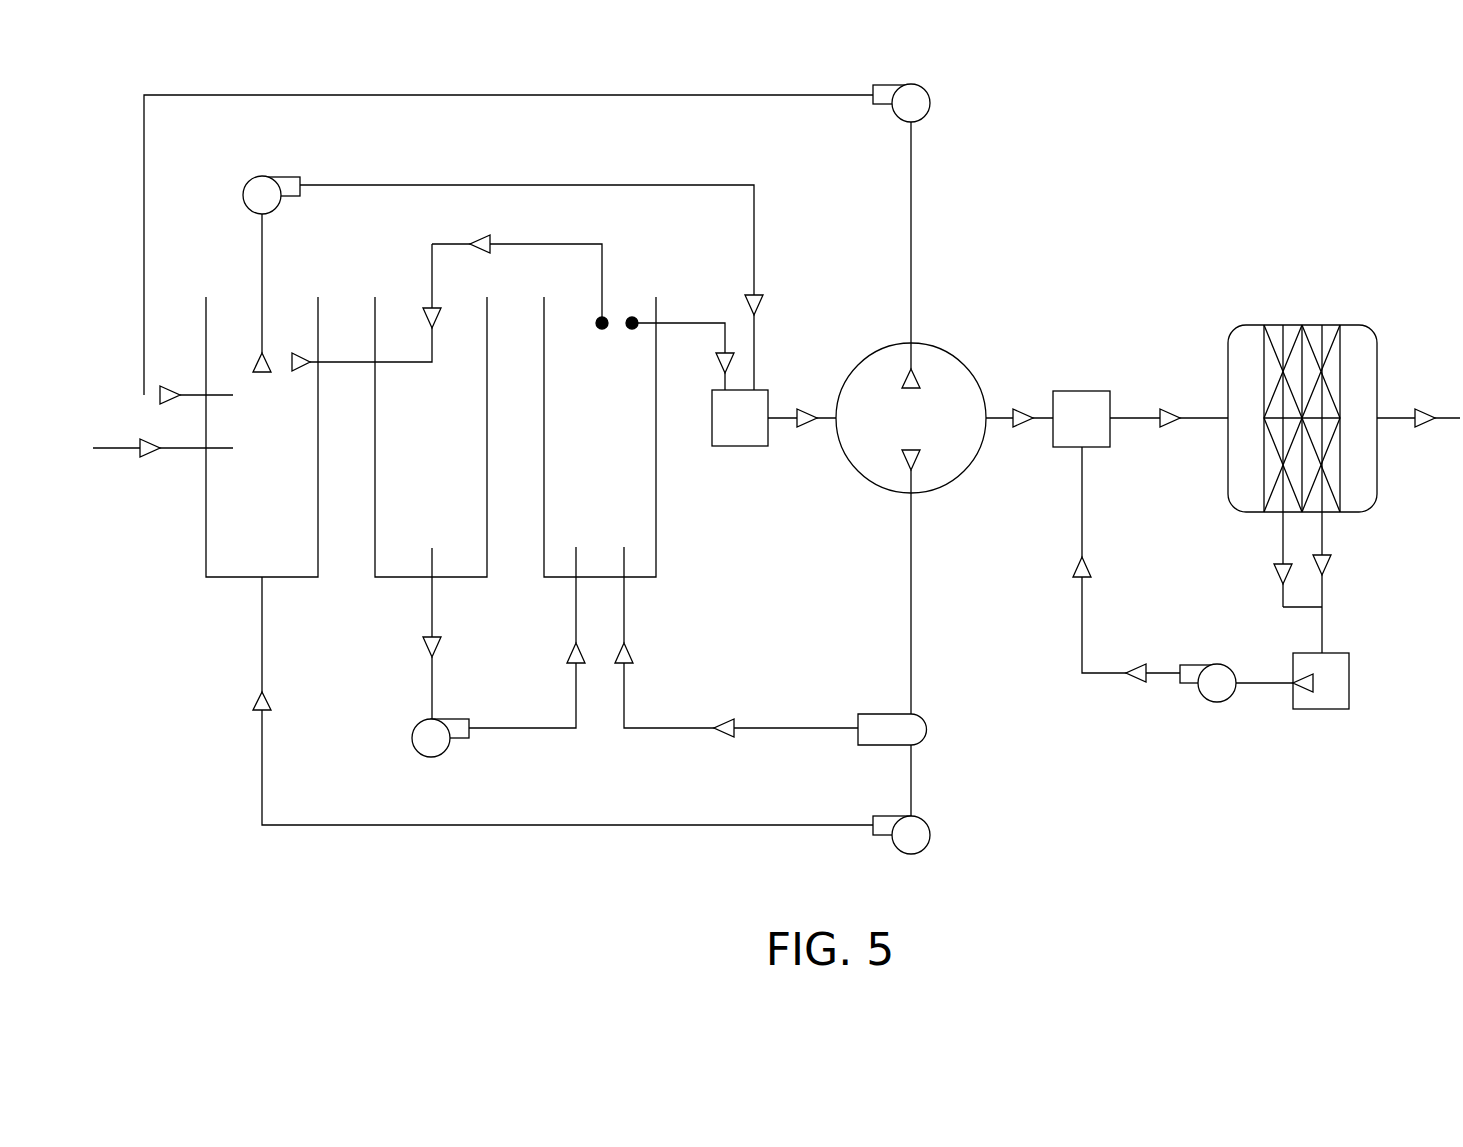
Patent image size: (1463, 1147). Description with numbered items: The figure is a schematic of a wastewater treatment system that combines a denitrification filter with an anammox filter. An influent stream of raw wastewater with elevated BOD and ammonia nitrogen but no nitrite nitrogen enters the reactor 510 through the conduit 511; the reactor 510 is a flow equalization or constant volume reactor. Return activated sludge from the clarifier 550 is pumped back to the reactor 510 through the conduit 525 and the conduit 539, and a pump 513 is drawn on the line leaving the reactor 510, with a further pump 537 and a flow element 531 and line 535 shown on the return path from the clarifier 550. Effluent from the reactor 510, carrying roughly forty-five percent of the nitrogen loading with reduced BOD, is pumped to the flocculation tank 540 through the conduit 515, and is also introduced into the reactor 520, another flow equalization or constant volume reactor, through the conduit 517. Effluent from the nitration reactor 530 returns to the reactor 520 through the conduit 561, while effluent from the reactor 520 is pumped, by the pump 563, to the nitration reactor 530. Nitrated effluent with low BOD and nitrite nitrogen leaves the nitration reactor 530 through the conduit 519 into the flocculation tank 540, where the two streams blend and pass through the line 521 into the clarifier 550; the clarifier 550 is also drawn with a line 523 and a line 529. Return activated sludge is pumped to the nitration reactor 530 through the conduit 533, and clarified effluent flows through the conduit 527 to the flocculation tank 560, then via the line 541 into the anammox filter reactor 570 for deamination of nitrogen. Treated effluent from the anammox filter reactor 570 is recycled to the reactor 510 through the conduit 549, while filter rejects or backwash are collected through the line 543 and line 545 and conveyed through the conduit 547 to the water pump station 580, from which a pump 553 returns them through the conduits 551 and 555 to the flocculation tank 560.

The reactor 510 is at (244, 506).
The conduit 511 is at (134, 474).
The pump 513 is at (252, 178).
The conduit 515 is at (442, 185).
The conduit 517 is at (343, 360).
The conduit 519 is at (687, 322).
The reactor 520 is at (409, 506).
The line 521 is at (810, 408).
The line 523 is at (911, 206).
The conduit 525 is at (930, 103).
The conduit 527 is at (1003, 408).
The line 529 is at (911, 592).
The nitration reactor 530 is at (577, 506).
The valve 531 is at (927, 722).
The conduit 533 is at (780, 727).
The line 535 is at (911, 780).
The pump 537 is at (930, 843).
The conduit 539 is at (523, 826).
The flocculation tank 540 is at (719, 431).
The line 541 is at (1139, 415).
The line 543 is at (1284, 536).
The line 545 is at (1284, 602).
The conduit 547 is at (1322, 533).
The conduit 549 is at (1400, 408).
The clarifier 550 is at (886, 434).
The conduit 551 is at (1258, 688).
The pump 553 is at (1200, 700).
The conduit 555 is at (1082, 607).
The flocculation tank 560 is at (1060, 431).
The conduit 561 is at (547, 242).
The conduit 563 is at (412, 745).
The anammox filter reactor 570 is at (1310, 325).
The water pump station 580 is at (1349, 683).